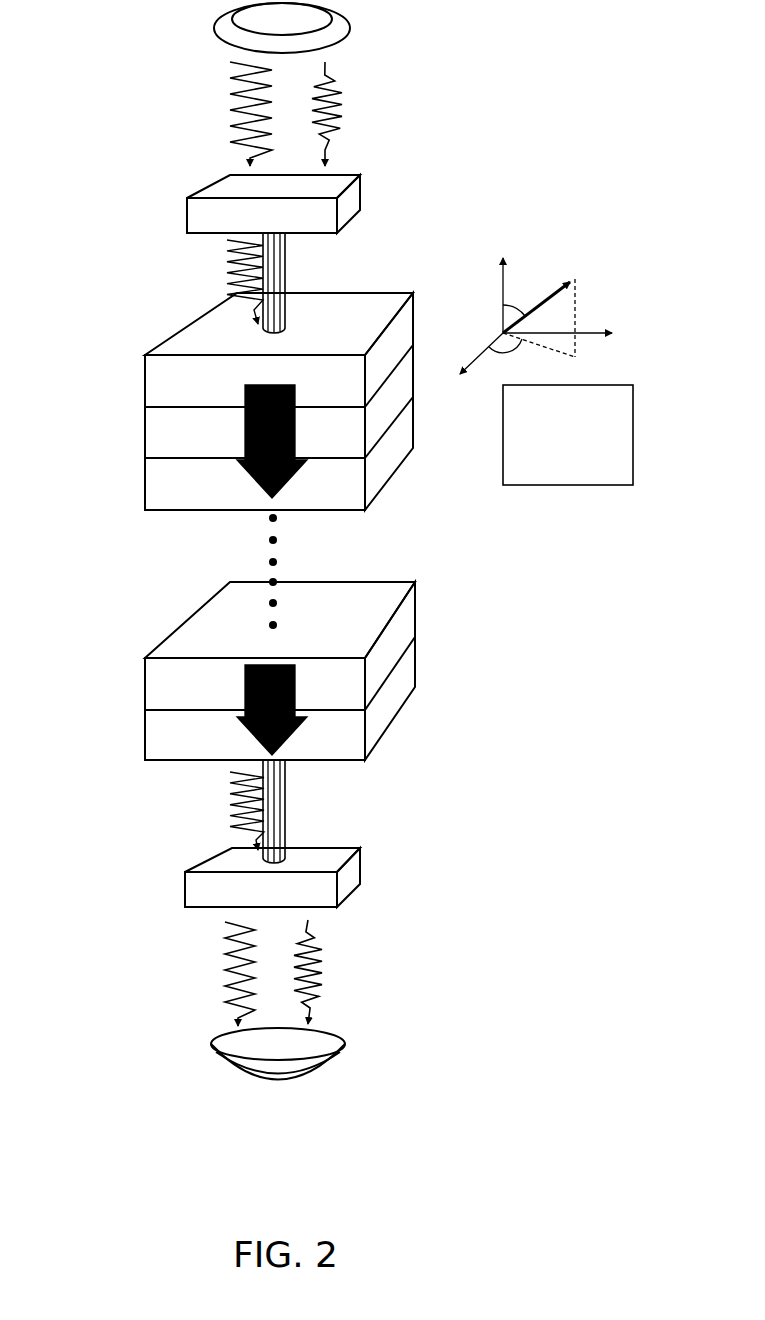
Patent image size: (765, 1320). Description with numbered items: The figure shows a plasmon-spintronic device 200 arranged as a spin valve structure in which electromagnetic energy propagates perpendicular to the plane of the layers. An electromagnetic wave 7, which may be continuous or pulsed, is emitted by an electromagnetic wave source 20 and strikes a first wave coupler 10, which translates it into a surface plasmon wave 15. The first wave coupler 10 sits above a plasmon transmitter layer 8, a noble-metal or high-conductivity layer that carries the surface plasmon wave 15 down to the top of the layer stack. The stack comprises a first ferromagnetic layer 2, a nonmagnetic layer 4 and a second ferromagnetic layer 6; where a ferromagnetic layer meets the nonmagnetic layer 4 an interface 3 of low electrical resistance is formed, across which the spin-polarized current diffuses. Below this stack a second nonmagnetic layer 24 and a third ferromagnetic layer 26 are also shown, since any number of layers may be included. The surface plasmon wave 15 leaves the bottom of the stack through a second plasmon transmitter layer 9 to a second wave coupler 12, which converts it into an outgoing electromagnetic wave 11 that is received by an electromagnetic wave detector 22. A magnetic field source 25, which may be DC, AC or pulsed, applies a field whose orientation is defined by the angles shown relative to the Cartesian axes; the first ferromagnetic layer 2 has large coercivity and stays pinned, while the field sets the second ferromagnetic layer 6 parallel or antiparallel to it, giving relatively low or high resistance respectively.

The plasmon-spintronic device 200 is at (440, 152).
The electromagnetic wave source 20 is at (250, 18).
The electromagnetic wave 7 is at (342, 92).
The first wave coupler 10 is at (228, 213).
The plasmon transmitter layer 8 is at (290, 272).
The surface plasmon wave 15 is at (237, 283).
The first ferromagnetic layer 2 is at (215, 397).
The nonmagnetic layer 4 is at (215, 446).
The second ferromagnetic layer 6 is at (215, 487).
The interface 3 is at (395, 360).
The second nonmagnetic layer 24 is at (215, 687).
The third ferromagnetic layer 26 is at (215, 737).
The second plasmon transmitter layer 9 is at (290, 815).
The second wave coupler 12 is at (222, 896).
The outgoing electromagnetic wave 11 is at (330, 963).
The electromagnetic wave detector 22 is at (237, 1055).
The magnetic field source 25 is at (568, 435).